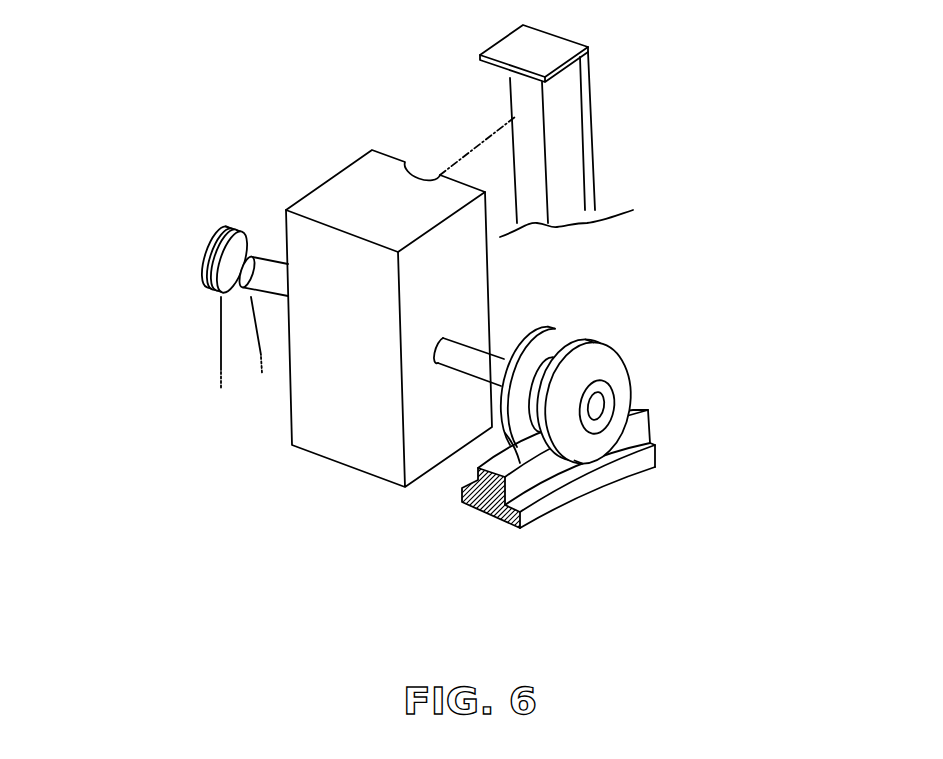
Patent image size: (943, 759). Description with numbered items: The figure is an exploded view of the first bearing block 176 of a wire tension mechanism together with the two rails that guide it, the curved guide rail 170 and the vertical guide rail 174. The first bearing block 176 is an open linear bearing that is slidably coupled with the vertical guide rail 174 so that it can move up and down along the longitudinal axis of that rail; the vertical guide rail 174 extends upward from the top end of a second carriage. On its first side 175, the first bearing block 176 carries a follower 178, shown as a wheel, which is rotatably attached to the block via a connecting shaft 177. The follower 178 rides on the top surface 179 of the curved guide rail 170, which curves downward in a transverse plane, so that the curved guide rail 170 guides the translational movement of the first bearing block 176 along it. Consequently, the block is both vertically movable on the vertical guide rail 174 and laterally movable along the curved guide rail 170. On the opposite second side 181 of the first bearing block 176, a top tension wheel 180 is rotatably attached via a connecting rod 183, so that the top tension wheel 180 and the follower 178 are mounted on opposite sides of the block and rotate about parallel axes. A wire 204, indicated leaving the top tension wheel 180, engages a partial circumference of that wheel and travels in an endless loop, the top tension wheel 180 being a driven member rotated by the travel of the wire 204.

The curved guide rail 170 is at (575, 495).
The vertical guide rail 174 is at (585, 97).
The first side 175 is at (470, 257).
The first bearing block 176 is at (445, 297).
The connecting shaft 177 is at (472, 372).
The follower 178 is at (632, 372).
The top surface 179 is at (505, 438).
The top tension wheel 180 is at (216, 228).
The second side 181 is at (290, 415).
The connecting rod 183 is at (279, 262).
The wire 204 is at (221, 328).